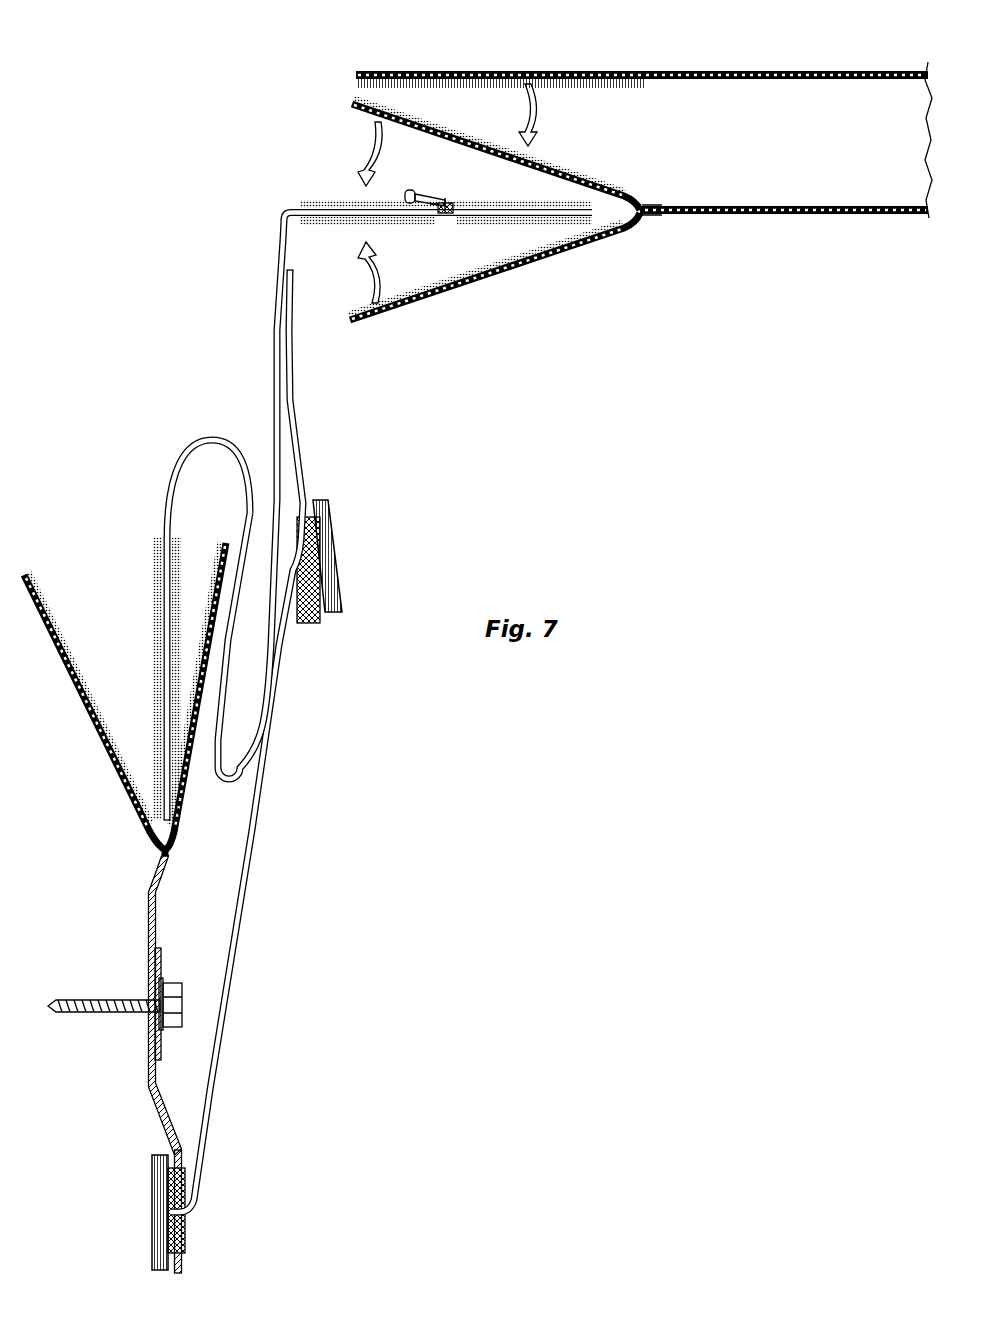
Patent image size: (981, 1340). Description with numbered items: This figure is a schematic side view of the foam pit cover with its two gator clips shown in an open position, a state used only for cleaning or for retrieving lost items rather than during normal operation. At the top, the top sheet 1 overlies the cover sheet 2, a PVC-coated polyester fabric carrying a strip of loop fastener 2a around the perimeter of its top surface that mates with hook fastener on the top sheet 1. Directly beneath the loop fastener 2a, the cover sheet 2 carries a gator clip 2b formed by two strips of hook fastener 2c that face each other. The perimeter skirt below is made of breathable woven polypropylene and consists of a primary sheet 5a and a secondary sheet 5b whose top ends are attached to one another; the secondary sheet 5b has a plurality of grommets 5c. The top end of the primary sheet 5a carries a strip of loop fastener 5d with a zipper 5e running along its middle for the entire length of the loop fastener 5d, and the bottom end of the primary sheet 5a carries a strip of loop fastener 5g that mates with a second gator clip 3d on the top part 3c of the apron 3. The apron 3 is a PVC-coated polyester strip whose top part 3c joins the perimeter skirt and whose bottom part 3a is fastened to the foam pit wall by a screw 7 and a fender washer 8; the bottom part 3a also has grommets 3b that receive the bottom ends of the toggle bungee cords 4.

The top sheet 1 is at (705, 71).
The cover sheet 2 is at (597, 82).
The loop fastener 2a is at (598, 173).
The gator clip 2b is at (511, 290).
The hook fastener 2c is at (351, 113).
The apron 3 is at (780, 205).
The bottom part of apron 3a is at (182, 1262).
The grommets 3b is at (186, 1233).
The top part of apron 3c is at (194, 796).
The gator clip 3d is at (105, 570).
The toggle bungee cords 4 is at (250, 878).
The primary sheet 5a is at (219, 440).
The secondary sheet 5b is at (300, 448).
The grommets 5c is at (308, 603).
The loop fastener 5d is at (390, 208).
The zipper 5e is at (445, 213).
The loop fastener 5g is at (176, 583).
The screw 7 is at (178, 1005).
The fender washer 8 is at (162, 1048).